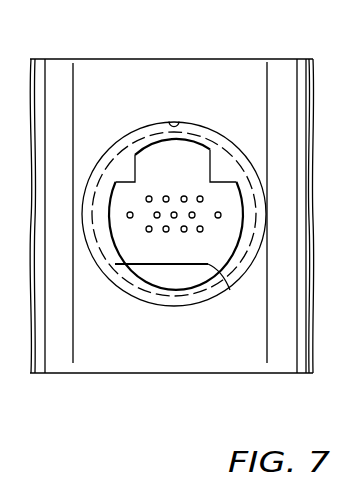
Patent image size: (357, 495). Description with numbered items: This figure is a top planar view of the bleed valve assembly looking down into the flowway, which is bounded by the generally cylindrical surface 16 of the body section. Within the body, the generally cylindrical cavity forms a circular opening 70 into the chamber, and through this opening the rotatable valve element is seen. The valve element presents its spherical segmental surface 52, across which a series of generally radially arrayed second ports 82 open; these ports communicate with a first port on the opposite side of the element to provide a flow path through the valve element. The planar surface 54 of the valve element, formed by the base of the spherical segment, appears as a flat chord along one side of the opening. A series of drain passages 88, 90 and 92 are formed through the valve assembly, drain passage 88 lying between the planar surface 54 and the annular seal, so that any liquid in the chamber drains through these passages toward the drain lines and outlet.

The generally cylindrical surface 16 is at (135, 85).
The spherical segmental surface 52 is at (168, 252).
The planar surface 54 is at (205, 282).
The circular opening 70 is at (178, 121).
The second ports 82 is at (204, 199).
The drain passage 88 is at (178, 273).
The drain passage 90 is at (218, 171).
The drain passage 92 is at (128, 175).